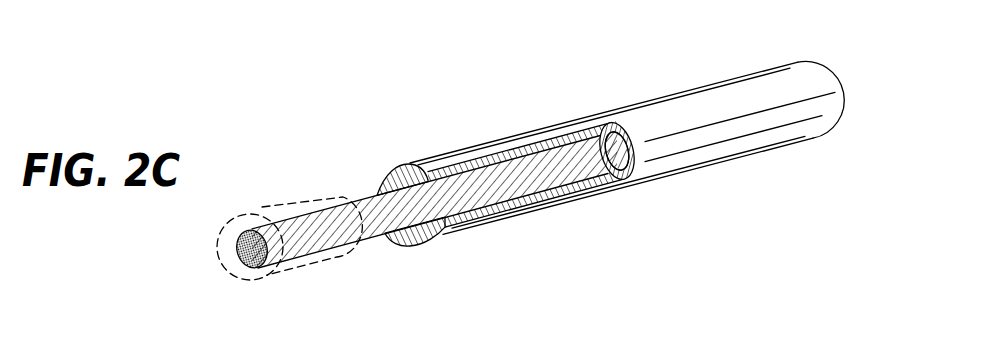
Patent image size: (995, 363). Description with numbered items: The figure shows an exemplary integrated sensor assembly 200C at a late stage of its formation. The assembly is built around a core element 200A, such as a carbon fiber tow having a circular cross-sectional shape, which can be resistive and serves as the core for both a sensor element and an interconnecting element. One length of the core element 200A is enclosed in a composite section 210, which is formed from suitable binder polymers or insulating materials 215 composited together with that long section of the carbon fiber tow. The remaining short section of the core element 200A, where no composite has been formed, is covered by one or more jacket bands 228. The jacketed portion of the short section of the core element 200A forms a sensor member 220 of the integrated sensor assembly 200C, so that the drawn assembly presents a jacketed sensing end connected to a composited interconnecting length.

The integrated sensor assembly 200C is at (430, 78).
The composite section 210 is at (636, 84).
The binder polymer or insulating material 215 is at (399, 171).
The sensor member 220 is at (249, 155).
The jacket band 228 is at (270, 202).
The core element 200A is at (251, 262).